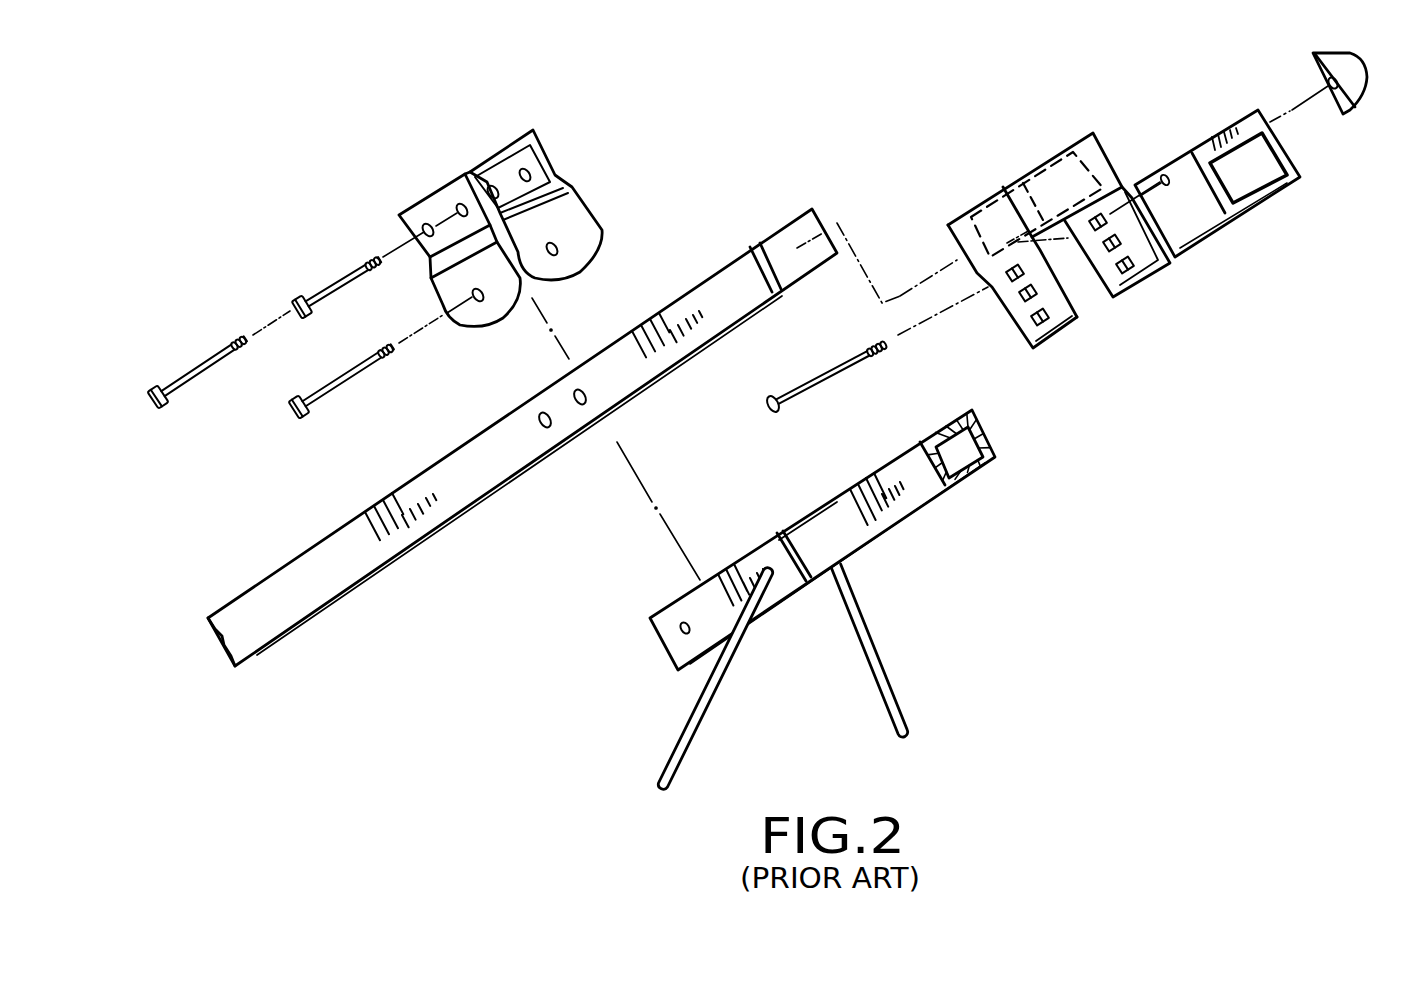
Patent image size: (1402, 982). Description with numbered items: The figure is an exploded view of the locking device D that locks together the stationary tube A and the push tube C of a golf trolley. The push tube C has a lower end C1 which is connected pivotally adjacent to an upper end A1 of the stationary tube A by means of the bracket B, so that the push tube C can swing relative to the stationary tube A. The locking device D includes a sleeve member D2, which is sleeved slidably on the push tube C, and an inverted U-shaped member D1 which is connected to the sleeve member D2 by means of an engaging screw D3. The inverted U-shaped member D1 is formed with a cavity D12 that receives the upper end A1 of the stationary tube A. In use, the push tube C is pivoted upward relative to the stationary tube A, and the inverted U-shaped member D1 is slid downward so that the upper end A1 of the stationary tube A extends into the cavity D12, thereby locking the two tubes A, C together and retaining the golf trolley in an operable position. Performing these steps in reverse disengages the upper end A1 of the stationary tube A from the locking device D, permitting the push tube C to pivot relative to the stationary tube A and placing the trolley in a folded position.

The stationary tube A is at (619, 399).
The upper end of the stationary tube A1 is at (715, 283).
The bracket B is at (605, 200).
The push tube C is at (802, 599).
The lower end of the push tube C1 is at (672, 639).
The locking device D is at (1066, 252).
The inverted U-shaped member D1 is at (1059, 212).
The cavity D12 is at (1052, 190).
The sleeve member D2 is at (1287, 153).
The engaging screw D3 is at (822, 382).